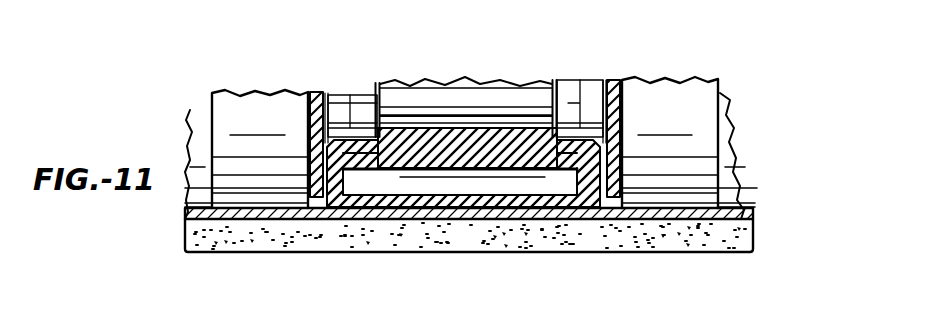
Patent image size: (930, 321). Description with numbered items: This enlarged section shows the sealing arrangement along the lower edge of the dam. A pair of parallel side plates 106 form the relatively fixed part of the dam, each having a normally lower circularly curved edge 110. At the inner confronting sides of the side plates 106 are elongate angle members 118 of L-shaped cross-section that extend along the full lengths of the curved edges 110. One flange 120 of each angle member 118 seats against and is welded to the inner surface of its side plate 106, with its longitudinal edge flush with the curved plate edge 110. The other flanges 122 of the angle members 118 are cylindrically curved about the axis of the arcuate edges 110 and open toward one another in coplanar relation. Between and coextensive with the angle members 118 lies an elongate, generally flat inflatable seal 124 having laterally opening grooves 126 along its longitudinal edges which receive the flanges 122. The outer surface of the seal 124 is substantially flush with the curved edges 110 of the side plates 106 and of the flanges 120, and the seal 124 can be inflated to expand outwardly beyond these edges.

The side plate 106 is at (308, 93).
The circularly curved edge 110 is at (309, 208).
The angle member 118 is at (308, 167).
The flange 120 is at (321, 208).
The flange 122 is at (352, 120).
The inflatable seal 124 is at (494, 115).
The groove 126 is at (382, 122).